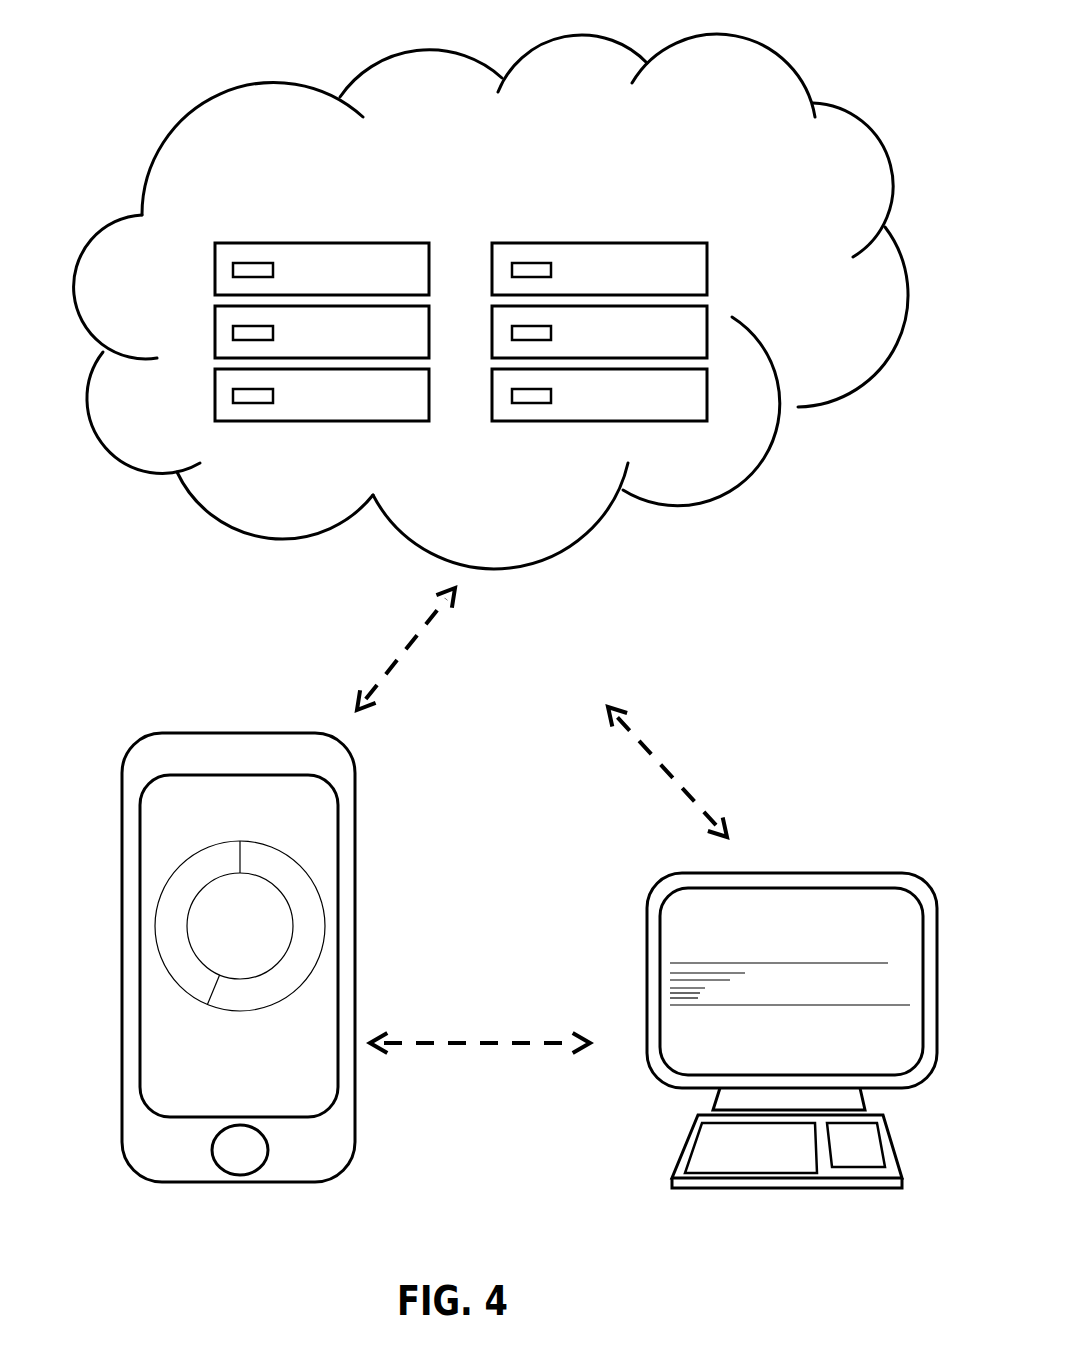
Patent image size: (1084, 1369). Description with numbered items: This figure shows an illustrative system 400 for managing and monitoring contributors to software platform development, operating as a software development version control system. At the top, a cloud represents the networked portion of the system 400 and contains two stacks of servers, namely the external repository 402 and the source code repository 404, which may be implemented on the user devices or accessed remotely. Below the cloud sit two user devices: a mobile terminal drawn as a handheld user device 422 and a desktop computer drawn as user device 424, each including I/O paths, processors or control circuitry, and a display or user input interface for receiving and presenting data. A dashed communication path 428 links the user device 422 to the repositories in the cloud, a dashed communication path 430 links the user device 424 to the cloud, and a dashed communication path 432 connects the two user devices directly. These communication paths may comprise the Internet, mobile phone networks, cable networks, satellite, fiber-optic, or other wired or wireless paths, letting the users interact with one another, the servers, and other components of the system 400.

The system 400 is at (470, 26).
The external repository 402 is at (375, 238).
The source code repository 404 is at (640, 240).
The user device 422 is at (248, 713).
The user device 424 is at (782, 865).
The communication path 428 is at (378, 628).
The communication path 430 is at (678, 720).
The communication path 432 is at (470, 1010).